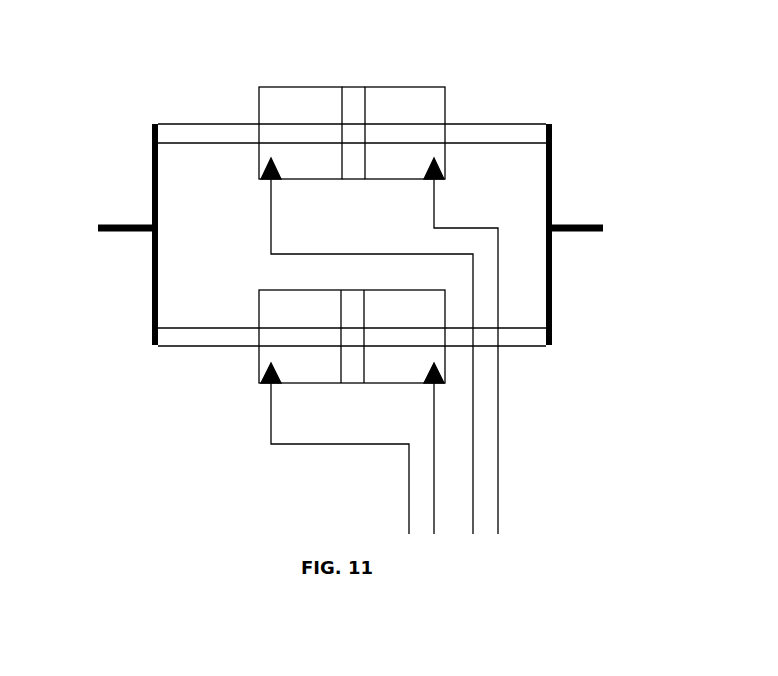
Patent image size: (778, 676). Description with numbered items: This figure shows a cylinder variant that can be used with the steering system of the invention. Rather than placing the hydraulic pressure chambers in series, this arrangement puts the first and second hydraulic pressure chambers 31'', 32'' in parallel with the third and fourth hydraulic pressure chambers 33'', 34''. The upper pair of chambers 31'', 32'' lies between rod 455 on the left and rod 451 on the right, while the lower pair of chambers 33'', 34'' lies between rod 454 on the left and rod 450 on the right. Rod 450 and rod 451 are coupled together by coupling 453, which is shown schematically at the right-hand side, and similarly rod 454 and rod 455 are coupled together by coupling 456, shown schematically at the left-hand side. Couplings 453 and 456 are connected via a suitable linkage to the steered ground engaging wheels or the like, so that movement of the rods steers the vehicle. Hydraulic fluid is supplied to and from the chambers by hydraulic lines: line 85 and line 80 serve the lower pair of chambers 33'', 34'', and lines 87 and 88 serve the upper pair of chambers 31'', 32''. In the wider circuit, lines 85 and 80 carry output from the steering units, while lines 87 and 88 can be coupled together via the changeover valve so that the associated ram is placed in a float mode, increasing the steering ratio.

The rod 450 is at (517, 343).
The coupling 453 is at (553, 175).
The coupling 456 is at (116, 226).
The rod 455 is at (195, 133).
The rod 451 is at (507, 133).
The rod 454 is at (185, 333).
The first hydraulic pressure chamber 31'' is at (296, 106).
The second hydraulic pressure chamber 32'' is at (400, 106).
The third hydraulic pressure chamber 33'' is at (278, 344).
The fourth hydraulic pressure chamber 34'' is at (407, 320).
The hydraulic line 85 is at (340, 445).
The hydraulic line 80 is at (435, 523).
The hydraulic line 87 is at (472, 510).
The hydraulic line 88 is at (498, 499).